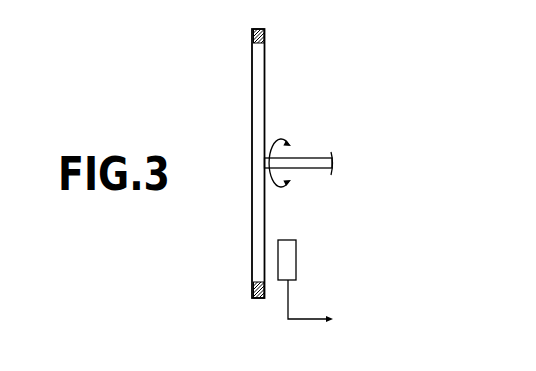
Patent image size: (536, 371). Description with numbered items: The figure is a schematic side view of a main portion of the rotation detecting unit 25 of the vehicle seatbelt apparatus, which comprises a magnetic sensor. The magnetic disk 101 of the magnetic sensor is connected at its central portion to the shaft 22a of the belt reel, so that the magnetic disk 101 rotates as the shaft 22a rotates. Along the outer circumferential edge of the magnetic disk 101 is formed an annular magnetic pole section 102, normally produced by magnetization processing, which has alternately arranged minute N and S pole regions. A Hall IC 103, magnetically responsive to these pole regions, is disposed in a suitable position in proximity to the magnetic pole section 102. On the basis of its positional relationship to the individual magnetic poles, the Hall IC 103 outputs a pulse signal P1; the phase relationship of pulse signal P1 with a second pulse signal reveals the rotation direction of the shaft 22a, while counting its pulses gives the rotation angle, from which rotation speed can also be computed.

The rotation detecting unit 25 is at (296, 62).
The magnetic disk 101 is at (257, 108).
The annular magnetic pole section 102 is at (254, 38).
The shaft 22a is at (309, 157).
The Hall IC 103 is at (288, 254).
The pulse signal P1 is at (326, 307).